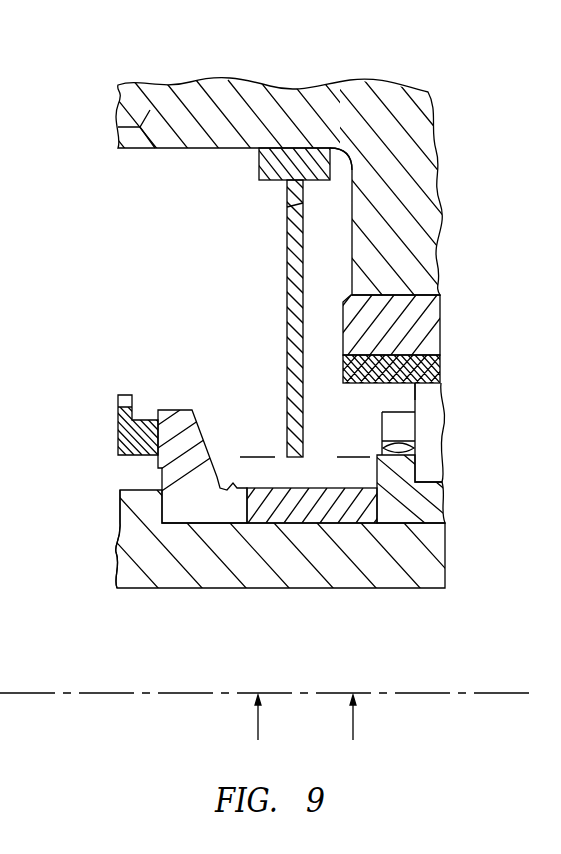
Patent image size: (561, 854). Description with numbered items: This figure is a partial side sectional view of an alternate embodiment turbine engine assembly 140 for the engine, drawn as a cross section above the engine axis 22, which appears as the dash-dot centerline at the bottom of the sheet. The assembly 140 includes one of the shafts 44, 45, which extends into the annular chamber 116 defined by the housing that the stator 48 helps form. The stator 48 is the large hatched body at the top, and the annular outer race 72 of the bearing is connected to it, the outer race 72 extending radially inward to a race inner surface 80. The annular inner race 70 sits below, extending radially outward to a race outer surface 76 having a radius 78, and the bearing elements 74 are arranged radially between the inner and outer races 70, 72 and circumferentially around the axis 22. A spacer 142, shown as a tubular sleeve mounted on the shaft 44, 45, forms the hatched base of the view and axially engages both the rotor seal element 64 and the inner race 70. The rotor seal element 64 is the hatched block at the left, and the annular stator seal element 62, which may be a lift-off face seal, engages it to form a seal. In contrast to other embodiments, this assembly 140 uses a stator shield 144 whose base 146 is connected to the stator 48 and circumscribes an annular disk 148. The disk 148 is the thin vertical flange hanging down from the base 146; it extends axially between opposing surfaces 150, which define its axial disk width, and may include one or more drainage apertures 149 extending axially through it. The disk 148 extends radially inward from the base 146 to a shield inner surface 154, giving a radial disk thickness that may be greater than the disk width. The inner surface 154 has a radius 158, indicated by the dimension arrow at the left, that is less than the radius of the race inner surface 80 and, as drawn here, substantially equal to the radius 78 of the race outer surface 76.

The turbine engine assembly 140 is at (78, 118).
The shield 144 is at (297, 147).
The base 146 is at (258, 163).
The stator 48 is at (440, 203).
The apertures 149 is at (285, 207).
The annular chamber 116 is at (173, 257).
The annular disk 148 is at (285, 238).
The opposing surfaces 150 is at (287, 345).
The radius 158 is at (257, 456).
The radius 78 is at (353, 456).
The outer race 72 is at (445, 372).
The race inner surface 80 is at (384, 411).
The bearing elements 74 is at (443, 427).
The race outer surface 76 is at (384, 442).
The inner race 70 is at (445, 503).
The shield inner surface 154 is at (278, 525).
The spacer 142 is at (277, 545).
The rotor seal element 64 is at (164, 545).
The stator seal element 62 is at (118, 440).
The shaft 44 is at (87, 564).
The shaft 45 is at (117, 548).
The axis 22 is at (416, 697).